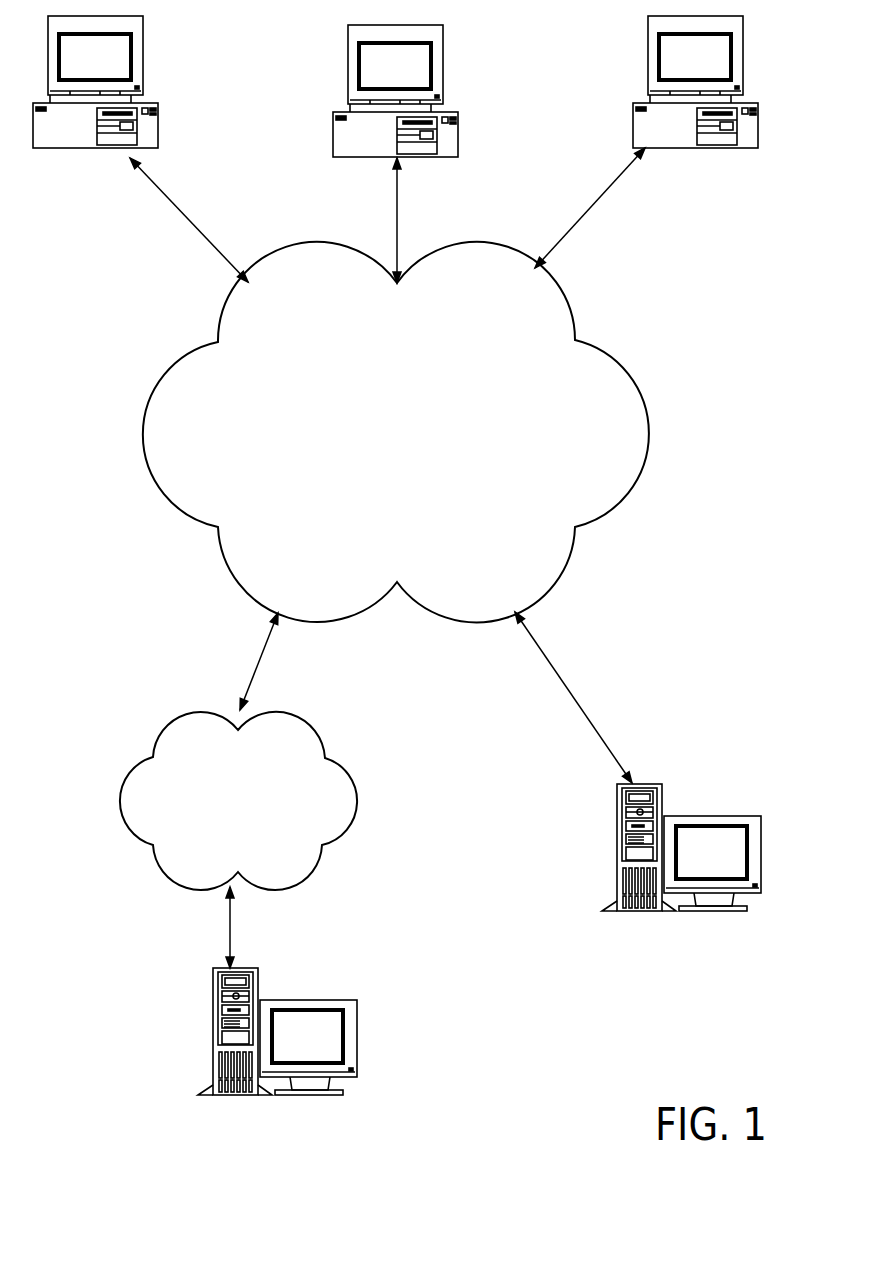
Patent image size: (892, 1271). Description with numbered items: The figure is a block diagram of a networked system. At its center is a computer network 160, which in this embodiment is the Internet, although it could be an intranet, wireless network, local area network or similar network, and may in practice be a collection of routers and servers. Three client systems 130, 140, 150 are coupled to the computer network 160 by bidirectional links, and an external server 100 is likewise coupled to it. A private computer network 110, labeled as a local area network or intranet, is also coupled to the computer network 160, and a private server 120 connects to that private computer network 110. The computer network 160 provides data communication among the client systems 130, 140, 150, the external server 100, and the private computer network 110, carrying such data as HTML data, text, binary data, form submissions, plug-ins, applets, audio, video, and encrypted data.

The external server 100 is at (663, 800).
The private computer network 110 is at (358, 795).
The private server 120 is at (258, 982).
The client system 130 is at (160, 115).
The client system 140 is at (465, 118).
The client system 150 is at (760, 115).
The computer network 160 is at (650, 417).